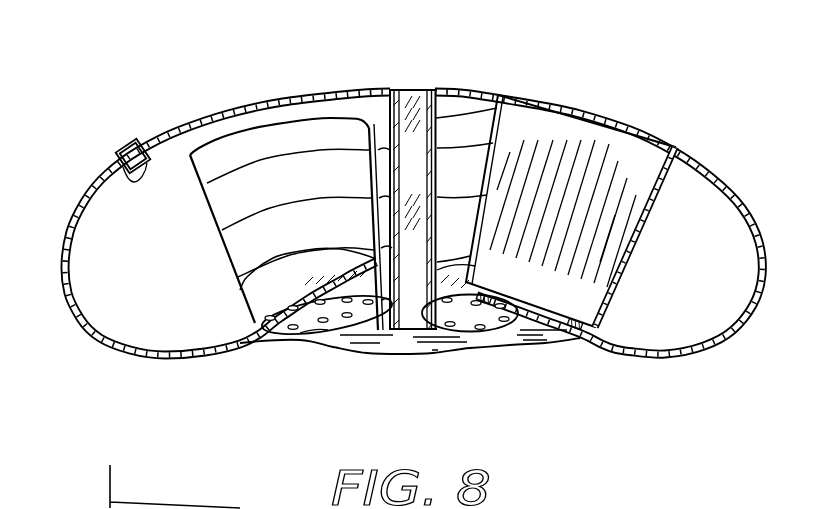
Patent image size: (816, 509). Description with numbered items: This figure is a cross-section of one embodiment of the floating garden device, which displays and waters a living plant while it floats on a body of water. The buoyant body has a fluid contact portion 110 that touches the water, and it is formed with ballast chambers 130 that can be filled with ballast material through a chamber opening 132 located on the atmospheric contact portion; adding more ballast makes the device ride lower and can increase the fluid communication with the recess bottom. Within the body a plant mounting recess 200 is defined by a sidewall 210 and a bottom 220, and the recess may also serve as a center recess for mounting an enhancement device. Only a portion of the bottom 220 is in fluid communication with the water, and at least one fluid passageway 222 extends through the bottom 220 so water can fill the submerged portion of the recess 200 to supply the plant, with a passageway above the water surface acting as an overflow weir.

The fluid contact portion 110 is at (252, 342).
The ballast chamber 130 is at (169, 278).
The chamber opening 132 is at (126, 167).
The plant mounting recess 200 is at (545, 108).
The sidewall 210 is at (507, 120).
The bottom 220 is at (470, 332).
The fluid passageway 222 is at (573, 328).